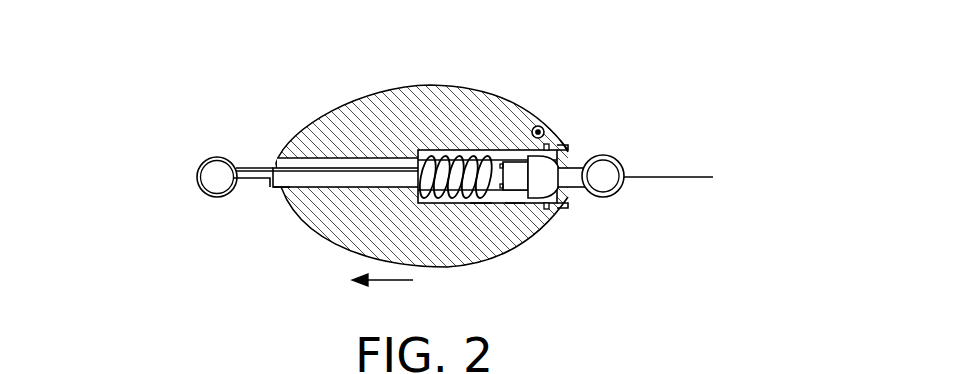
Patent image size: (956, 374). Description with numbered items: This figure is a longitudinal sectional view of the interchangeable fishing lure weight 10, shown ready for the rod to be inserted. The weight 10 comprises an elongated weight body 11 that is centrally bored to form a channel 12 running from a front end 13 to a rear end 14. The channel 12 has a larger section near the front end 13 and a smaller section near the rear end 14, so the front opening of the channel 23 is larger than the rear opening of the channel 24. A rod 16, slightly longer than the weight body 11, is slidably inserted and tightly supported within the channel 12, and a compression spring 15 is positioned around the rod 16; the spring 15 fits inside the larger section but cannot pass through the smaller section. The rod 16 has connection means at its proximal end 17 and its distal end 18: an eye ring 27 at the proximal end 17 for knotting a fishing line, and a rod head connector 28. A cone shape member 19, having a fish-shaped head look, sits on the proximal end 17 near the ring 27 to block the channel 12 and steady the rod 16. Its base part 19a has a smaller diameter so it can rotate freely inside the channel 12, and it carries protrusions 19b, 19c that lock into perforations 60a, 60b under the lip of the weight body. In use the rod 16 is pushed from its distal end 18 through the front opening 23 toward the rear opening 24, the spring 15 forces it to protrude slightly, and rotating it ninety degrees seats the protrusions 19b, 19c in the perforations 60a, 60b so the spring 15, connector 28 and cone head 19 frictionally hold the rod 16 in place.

The fishing lure weight 10 is at (278, 97).
The elongated weight body 11 is at (380, 90).
The channel 12 is at (485, 150).
The front end 13 is at (566, 137).
The rear end 14 is at (283, 150).
The compression spring 15 is at (443, 150).
The rod 16 is at (345, 192).
The proximal end 17 is at (574, 193).
The distal end 18 is at (273, 167).
The cone shape member 19 is at (565, 148).
The base part 19a is at (482, 204).
The protrusion 19b is at (531, 126).
The protrusion 19c is at (515, 204).
The front opening of the channel 23 is at (567, 163).
The rear opening of the channel 24 is at (274, 191).
The eye ring 27 is at (622, 200).
The rod head connector 28 is at (201, 190).
The perforation 60a is at (556, 142).
The perforation 60b is at (553, 212).